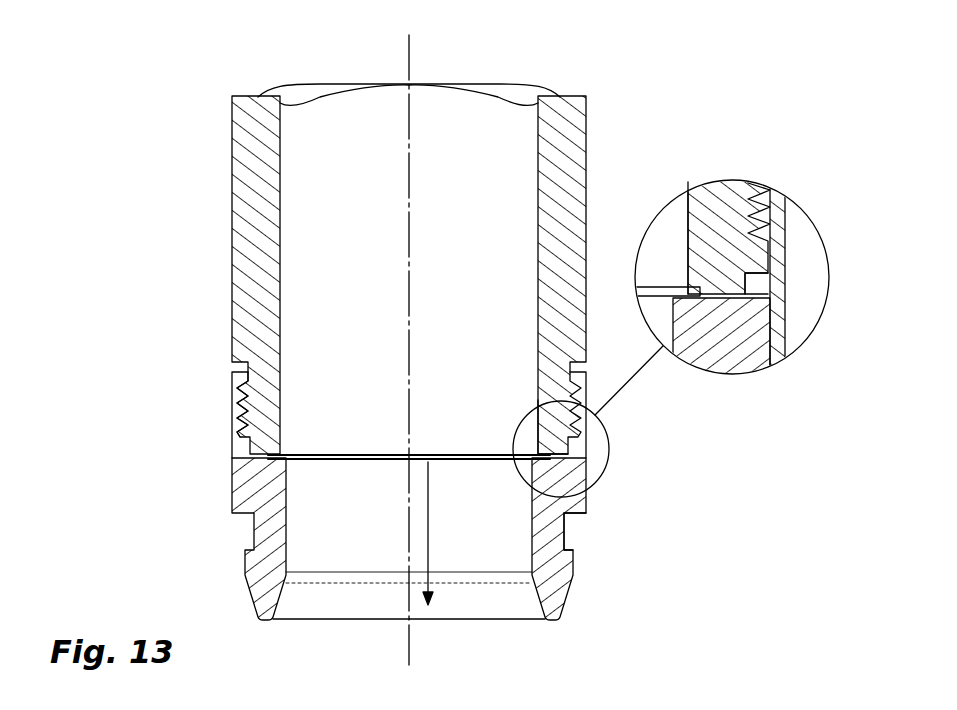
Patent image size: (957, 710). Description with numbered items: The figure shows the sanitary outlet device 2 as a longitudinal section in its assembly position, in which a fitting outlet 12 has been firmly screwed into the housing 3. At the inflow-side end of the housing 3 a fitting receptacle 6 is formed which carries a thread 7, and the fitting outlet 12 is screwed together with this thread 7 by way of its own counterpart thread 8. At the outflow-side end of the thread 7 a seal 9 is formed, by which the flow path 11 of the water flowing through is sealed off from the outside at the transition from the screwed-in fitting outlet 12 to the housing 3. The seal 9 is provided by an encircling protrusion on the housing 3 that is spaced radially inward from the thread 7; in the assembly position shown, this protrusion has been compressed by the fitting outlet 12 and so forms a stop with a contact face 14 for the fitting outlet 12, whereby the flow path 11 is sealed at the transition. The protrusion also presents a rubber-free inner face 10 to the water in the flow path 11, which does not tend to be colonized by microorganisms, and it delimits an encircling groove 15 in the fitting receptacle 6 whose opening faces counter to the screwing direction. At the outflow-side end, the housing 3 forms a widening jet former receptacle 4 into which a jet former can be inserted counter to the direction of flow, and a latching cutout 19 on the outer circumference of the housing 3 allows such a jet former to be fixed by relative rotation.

The sanitary outlet device 2 is at (680, 498).
The housing 3 is at (253, 483).
The jet former receptacle 4 is at (364, 557).
The fitting receptacle 6 is at (226, 412).
The thread 7 is at (770, 205).
The counterpart thread 8 is at (735, 212).
The seal 9 is at (516, 441).
The rubber-free inner face 10 is at (678, 287).
The flow path 11 is at (452, 533).
The fitting outlet 12 is at (252, 250).
The contact face 14 is at (745, 290).
The groove 15 is at (753, 289).
The latching cutout 19 is at (563, 528).